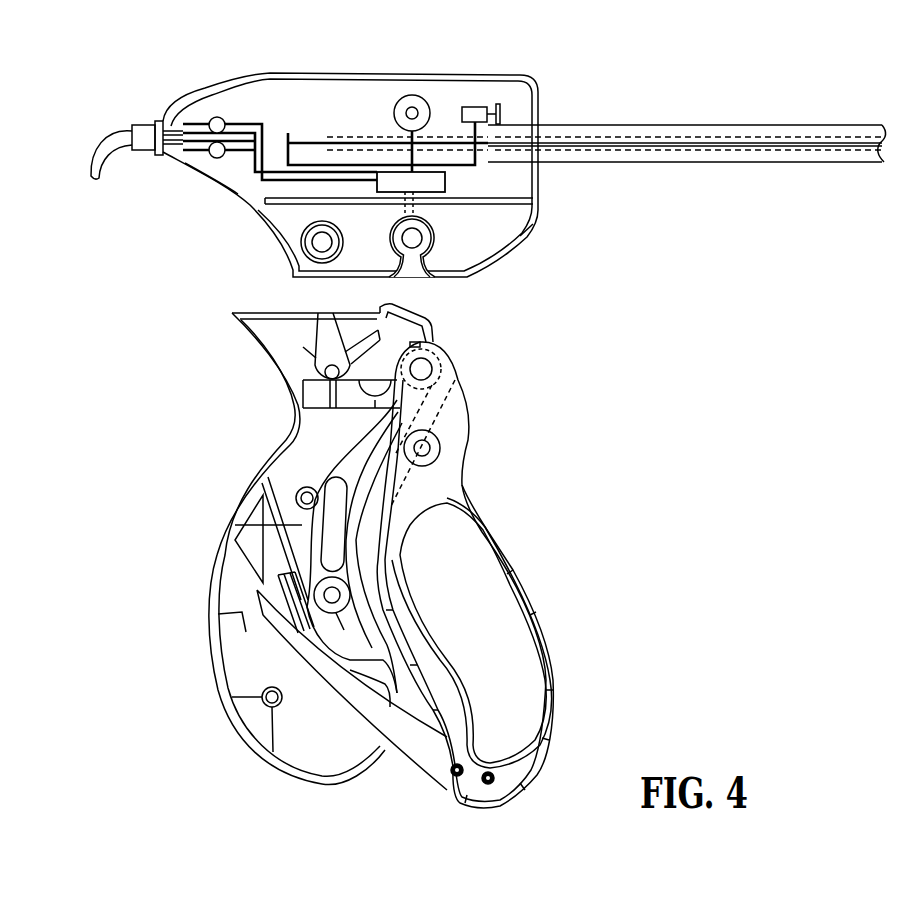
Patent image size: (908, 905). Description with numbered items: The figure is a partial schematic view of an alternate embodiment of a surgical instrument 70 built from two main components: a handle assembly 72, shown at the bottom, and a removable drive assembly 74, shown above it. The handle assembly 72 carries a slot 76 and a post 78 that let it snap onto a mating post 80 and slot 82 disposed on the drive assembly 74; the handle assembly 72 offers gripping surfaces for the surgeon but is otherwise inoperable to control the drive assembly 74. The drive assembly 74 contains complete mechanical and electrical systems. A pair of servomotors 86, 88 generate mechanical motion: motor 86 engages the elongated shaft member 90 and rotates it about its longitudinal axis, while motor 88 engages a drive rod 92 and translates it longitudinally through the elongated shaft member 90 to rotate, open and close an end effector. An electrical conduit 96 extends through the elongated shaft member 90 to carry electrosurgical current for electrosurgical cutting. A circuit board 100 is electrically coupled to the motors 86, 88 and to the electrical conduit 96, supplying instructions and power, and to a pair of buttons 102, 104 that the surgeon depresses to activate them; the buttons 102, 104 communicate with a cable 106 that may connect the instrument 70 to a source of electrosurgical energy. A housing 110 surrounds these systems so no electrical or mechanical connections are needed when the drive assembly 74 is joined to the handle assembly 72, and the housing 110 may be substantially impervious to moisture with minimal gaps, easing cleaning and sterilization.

The surgical instrument 70 is at (152, 68).
The handle assembly 72 is at (279, 455).
The drive assembly 74 is at (147, 121).
The slot 76 is at (331, 319).
The post 78 is at (427, 367).
The post 80 is at (306, 243).
The slot 82 is at (415, 270).
The servomotor 86 is at (474, 107).
The servomotor 88 is at (410, 95).
The elongated shaft member 90 is at (657, 125).
The drive rod 92 is at (740, 137).
The electrical conduit 96 is at (812, 140).
The circuit board 100 is at (447, 183).
The button 102 is at (217, 117).
The button 104 is at (217, 158).
The cable 106 is at (92, 165).
The housing 110 is at (327, 97).